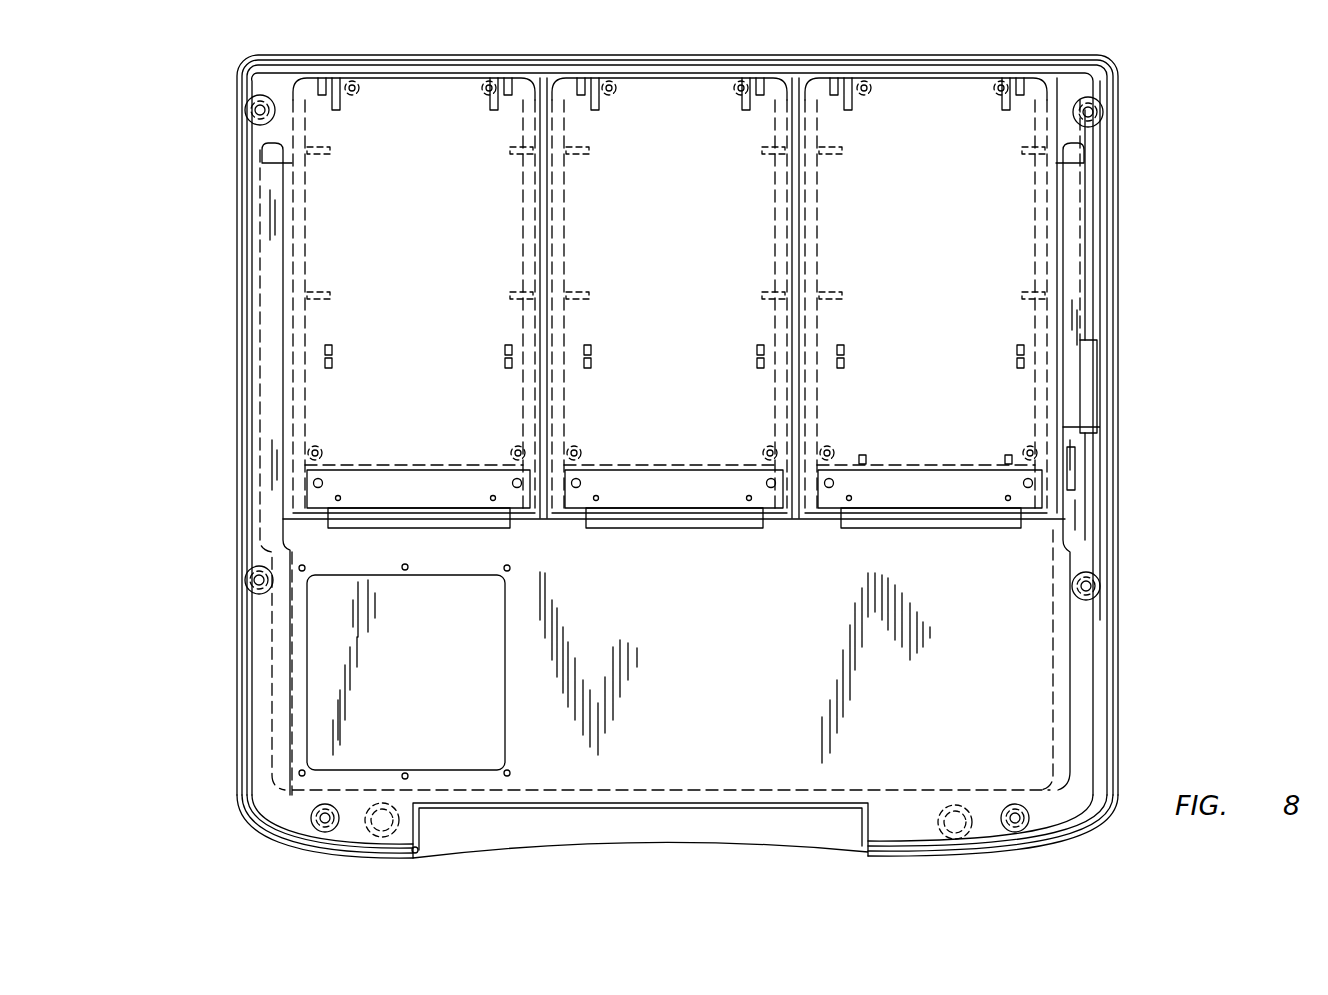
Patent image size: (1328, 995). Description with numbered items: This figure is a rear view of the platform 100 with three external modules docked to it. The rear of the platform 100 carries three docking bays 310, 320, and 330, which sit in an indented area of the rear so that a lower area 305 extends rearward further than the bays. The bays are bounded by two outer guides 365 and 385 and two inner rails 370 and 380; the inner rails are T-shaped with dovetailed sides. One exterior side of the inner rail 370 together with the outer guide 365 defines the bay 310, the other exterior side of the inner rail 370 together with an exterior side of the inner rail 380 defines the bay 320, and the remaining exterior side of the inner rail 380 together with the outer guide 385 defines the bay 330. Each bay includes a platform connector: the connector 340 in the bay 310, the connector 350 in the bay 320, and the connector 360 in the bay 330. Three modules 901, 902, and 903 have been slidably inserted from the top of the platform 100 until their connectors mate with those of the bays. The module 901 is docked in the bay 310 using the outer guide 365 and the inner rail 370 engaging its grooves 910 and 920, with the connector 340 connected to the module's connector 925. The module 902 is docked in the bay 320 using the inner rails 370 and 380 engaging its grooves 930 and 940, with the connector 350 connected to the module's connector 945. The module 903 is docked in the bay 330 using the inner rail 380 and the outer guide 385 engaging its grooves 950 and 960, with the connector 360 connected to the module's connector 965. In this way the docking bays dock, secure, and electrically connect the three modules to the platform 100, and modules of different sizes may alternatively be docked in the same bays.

The platform 100 is at (1120, 86).
The outer guide 385 is at (272, 141).
The outer guide 365 is at (1088, 144).
The module 903 is at (455, 163).
The module 902 is at (710, 163).
The module 901 is at (965, 163).
The inner rail 380 is at (548, 233).
The inner rail 370 is at (796, 256).
The docking bay 330 is at (426, 298).
The docking bay 320 is at (683, 300).
The docking bay 310 is at (939, 298).
The groove 960 is at (300, 400).
The groove 950 is at (535, 413).
The groove 940 is at (557, 400).
The groove 930 is at (785, 410).
The groove 920 is at (813, 403).
The groove 910 is at (1045, 412).
The connector 965 is at (405, 492).
The connector 945 is at (663, 492).
The connector 925 is at (917, 492).
The connector 360 is at (443, 512).
The connector 350 is at (703, 512).
The connector 340 is at (945, 512).
The area 305 is at (727, 673).